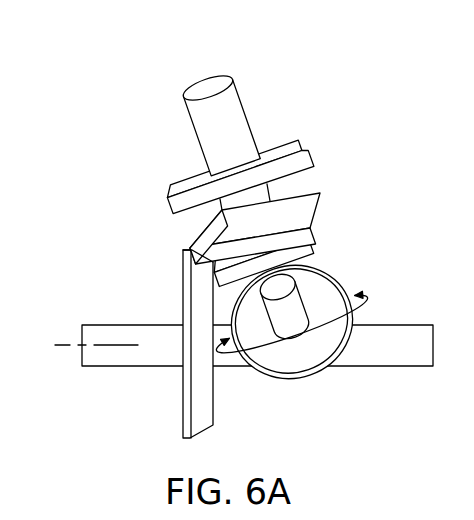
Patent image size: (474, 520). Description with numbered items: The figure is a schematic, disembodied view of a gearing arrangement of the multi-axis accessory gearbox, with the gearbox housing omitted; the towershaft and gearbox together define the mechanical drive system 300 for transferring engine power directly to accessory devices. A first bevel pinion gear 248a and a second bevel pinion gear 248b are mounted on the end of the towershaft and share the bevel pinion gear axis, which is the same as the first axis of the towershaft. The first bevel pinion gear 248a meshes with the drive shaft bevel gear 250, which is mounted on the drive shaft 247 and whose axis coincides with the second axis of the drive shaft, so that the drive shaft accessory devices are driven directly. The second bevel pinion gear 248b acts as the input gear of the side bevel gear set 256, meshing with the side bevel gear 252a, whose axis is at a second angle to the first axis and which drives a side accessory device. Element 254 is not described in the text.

The mechanical drive system 300 is at (142, 121).
The first bevel pinion gear 248a is at (318, 205).
The second bevel pinion gear 248b is at (312, 258).
The plate edge 254 is at (194, 267).
The side bevel gear set 256 is at (305, 268).
The drive shaft bevel gear 250 is at (183, 403).
The drive shaft 247 is at (402, 367).
The side bevel gear 252a is at (295, 379).